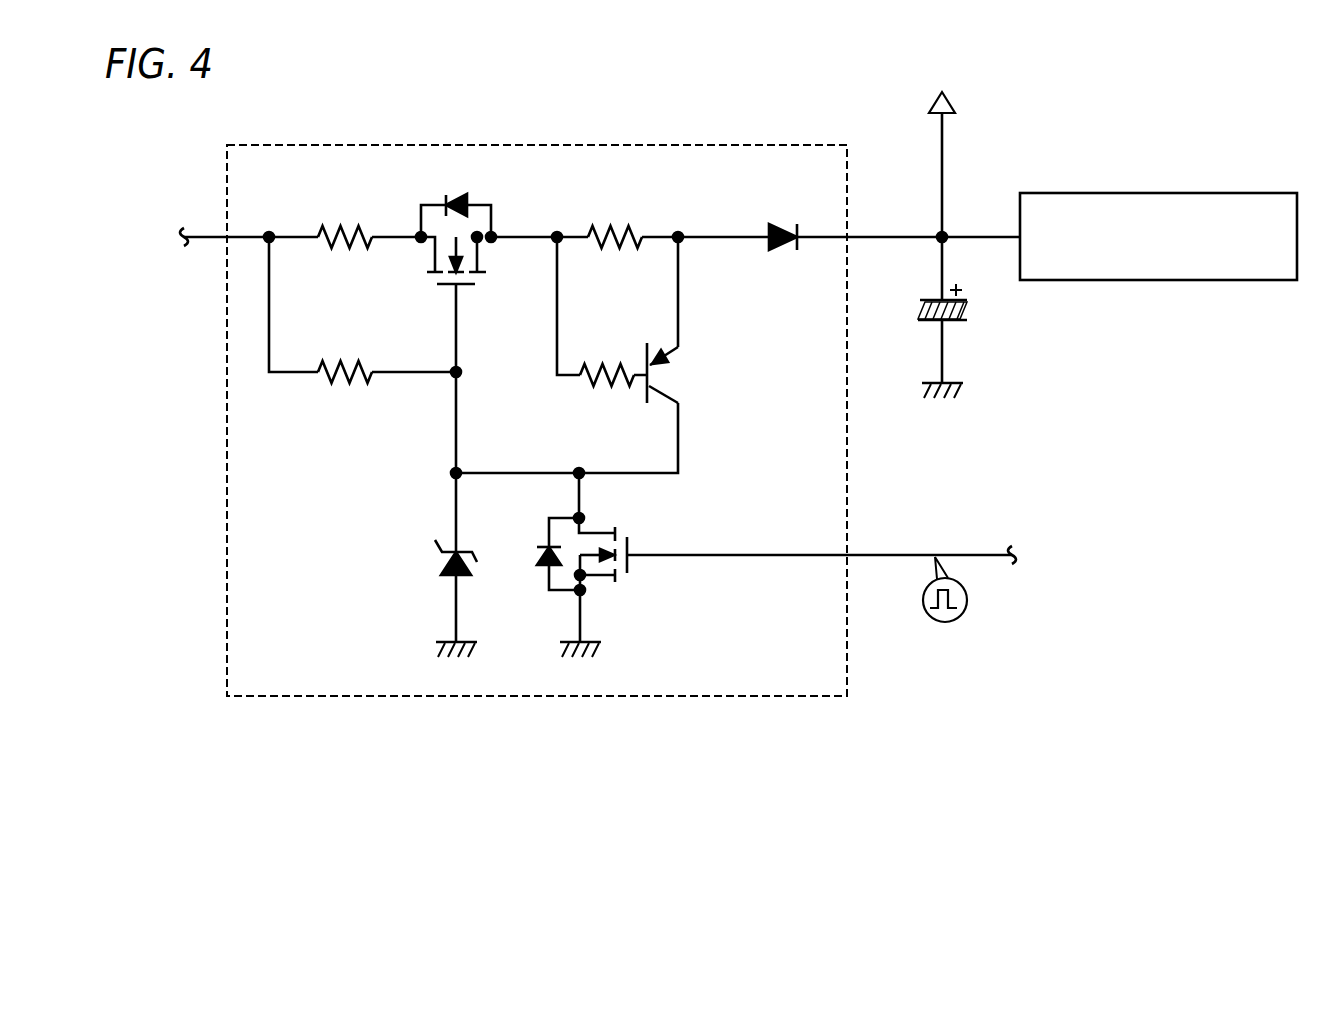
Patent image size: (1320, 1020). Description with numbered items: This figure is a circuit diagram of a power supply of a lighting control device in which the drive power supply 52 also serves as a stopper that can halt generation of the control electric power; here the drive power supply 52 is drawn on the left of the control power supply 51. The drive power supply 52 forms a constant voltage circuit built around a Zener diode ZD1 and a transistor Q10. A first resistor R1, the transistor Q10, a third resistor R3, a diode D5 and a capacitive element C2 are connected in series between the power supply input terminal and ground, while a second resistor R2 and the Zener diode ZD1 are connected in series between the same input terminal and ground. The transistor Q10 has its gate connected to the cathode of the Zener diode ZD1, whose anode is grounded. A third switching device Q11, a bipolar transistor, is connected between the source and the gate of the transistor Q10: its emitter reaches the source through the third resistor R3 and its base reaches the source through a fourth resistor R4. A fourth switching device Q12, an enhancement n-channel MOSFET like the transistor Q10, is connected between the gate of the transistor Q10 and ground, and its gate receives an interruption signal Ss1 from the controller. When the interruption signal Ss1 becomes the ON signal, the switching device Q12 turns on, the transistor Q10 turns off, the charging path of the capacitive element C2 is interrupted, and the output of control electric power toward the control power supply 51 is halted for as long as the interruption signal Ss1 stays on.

The control power supply 51 is at (1180, 192).
The drive power supply 52 is at (400, 143).
The first resistor R1 is at (345, 218).
The second resistor R2 is at (345, 353).
The third resistor R3 is at (615, 218).
The fourth resistor R4 is at (607, 356).
The transistor Q10 is at (444, 261).
The third switching device Q11 is at (688, 373).
The fourth switching device Q12 is at (776, 565).
The diode D5 is at (784, 217).
The Zener diode ZD1 is at (429, 565).
The capacitive element C2 is at (923, 245).
The interruption signal Ss1 is at (946, 608).